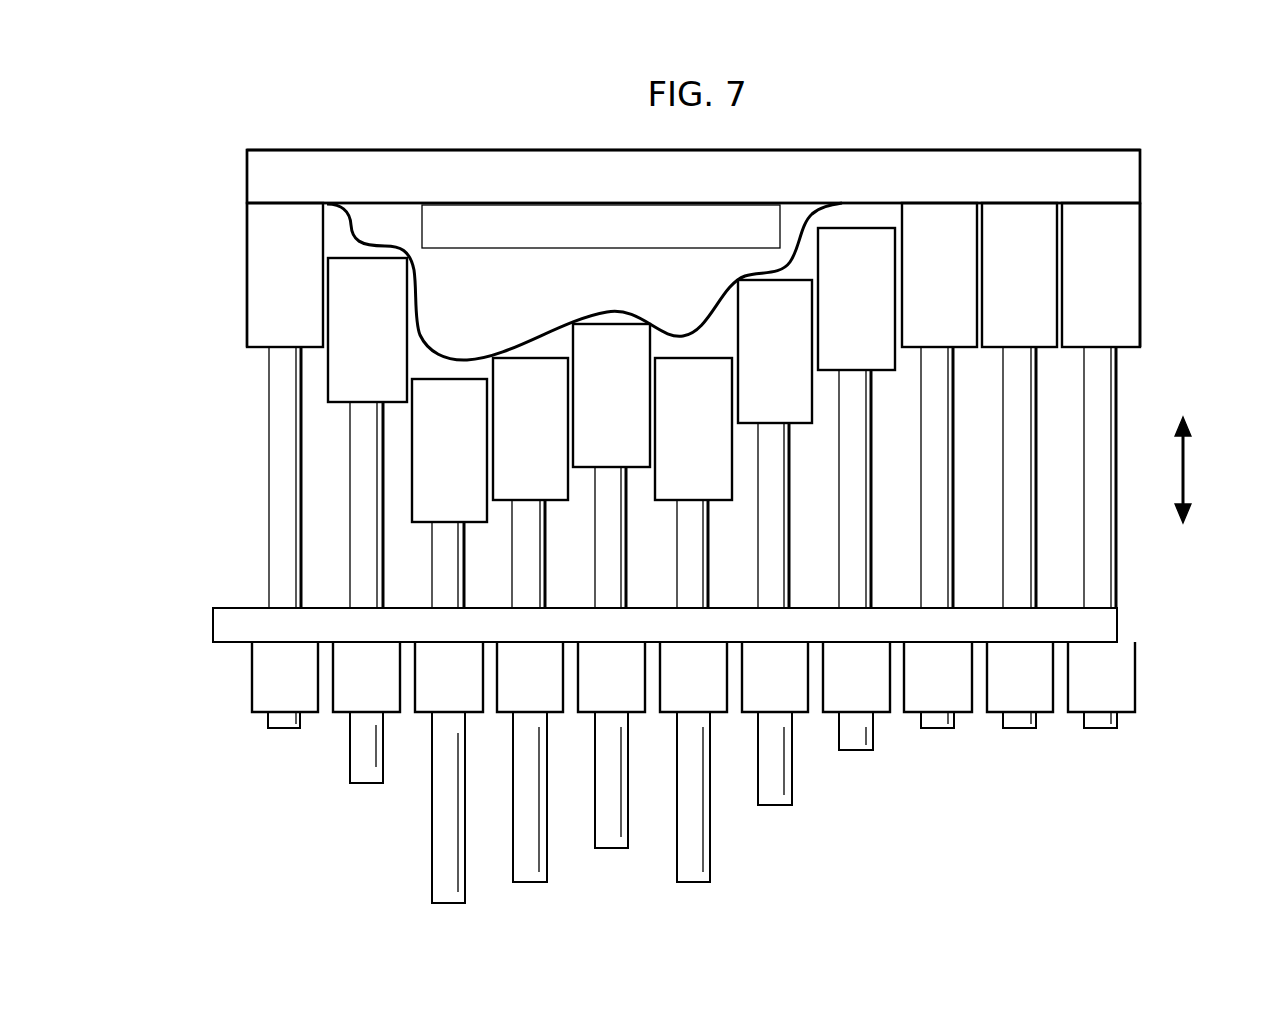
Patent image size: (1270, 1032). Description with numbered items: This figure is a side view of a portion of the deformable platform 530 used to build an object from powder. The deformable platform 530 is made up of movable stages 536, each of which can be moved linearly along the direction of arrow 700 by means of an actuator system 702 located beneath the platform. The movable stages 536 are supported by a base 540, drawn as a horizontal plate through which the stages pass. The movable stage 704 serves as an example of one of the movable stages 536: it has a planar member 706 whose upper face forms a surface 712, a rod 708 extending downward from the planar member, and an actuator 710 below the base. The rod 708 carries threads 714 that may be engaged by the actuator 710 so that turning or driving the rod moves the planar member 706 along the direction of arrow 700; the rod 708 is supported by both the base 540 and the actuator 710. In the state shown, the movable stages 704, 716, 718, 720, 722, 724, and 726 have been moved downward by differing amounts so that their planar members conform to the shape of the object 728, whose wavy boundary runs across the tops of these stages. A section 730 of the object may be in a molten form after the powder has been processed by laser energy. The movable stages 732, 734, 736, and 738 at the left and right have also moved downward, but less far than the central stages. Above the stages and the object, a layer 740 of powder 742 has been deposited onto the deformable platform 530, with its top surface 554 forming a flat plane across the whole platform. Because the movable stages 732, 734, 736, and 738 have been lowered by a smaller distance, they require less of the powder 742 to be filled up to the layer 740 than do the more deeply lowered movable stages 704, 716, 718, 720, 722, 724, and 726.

The deformable platform 530 is at (1141, 213).
The movable stages 536 is at (1123, 342).
The base 540 is at (1117, 630).
The powder bed surface 554 is at (937, 205).
The arrow 700 is at (1186, 470).
The actuator system 702 is at (693, 772).
The movable stage 704 is at (346, 348).
The planar member 706 is at (338, 375).
The rod 708 is at (362, 503).
The actuator 710 is at (345, 714).
The surface 712 is at (350, 255).
The threads 714 is at (350, 467).
The movable stage 716 is at (428, 466).
The movable stage 718 is at (509, 446).
The movable stage 720 is at (590, 413).
The movable stage 722 is at (672, 446).
The movable stage 724 is at (754, 368).
The movable stage 726 is at (835, 314).
The object 728 is at (512, 281).
The section 730 is at (675, 240).
The movable stage 732 is at (264, 291).
The movable stage 734 is at (918, 291).
The movable stage 736 is at (998, 291).
The movable stage 738 is at (1079, 291).
The layer 740 is at (449, 150).
The powder 742 is at (823, 158).